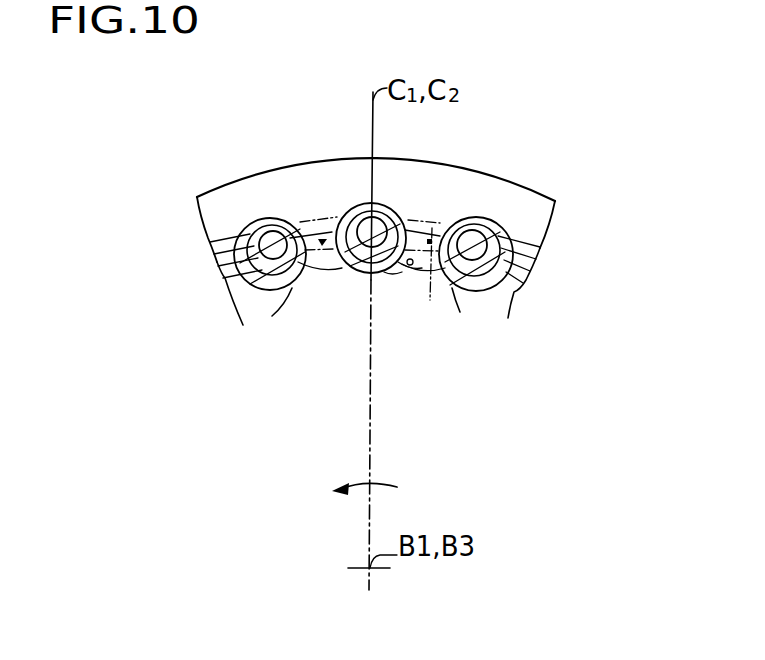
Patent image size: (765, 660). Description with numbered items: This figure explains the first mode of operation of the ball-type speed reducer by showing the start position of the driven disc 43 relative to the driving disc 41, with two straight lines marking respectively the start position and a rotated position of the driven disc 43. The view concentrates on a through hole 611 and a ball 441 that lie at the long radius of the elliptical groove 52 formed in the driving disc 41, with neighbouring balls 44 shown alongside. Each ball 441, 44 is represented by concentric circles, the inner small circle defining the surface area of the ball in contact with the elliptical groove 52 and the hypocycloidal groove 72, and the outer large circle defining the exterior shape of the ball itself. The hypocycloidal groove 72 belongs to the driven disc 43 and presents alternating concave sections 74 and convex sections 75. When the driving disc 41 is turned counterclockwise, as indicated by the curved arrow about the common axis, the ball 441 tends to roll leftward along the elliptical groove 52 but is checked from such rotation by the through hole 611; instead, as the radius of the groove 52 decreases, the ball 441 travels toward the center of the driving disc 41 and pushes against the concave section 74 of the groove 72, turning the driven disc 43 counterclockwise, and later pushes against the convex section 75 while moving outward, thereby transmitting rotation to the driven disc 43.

The driven disc 43 is at (412, 205).
The driving disc 41 is at (510, 179).
The balls 44 is at (553, 247).
The ball 441 is at (354, 271).
The hypocycloidal groove 72 is at (333, 248).
The concave section 74 is at (440, 265).
The convex section 75 is at (420, 272).
The through hole 611 is at (400, 272).
The elliptical groove 52 is at (430, 300).